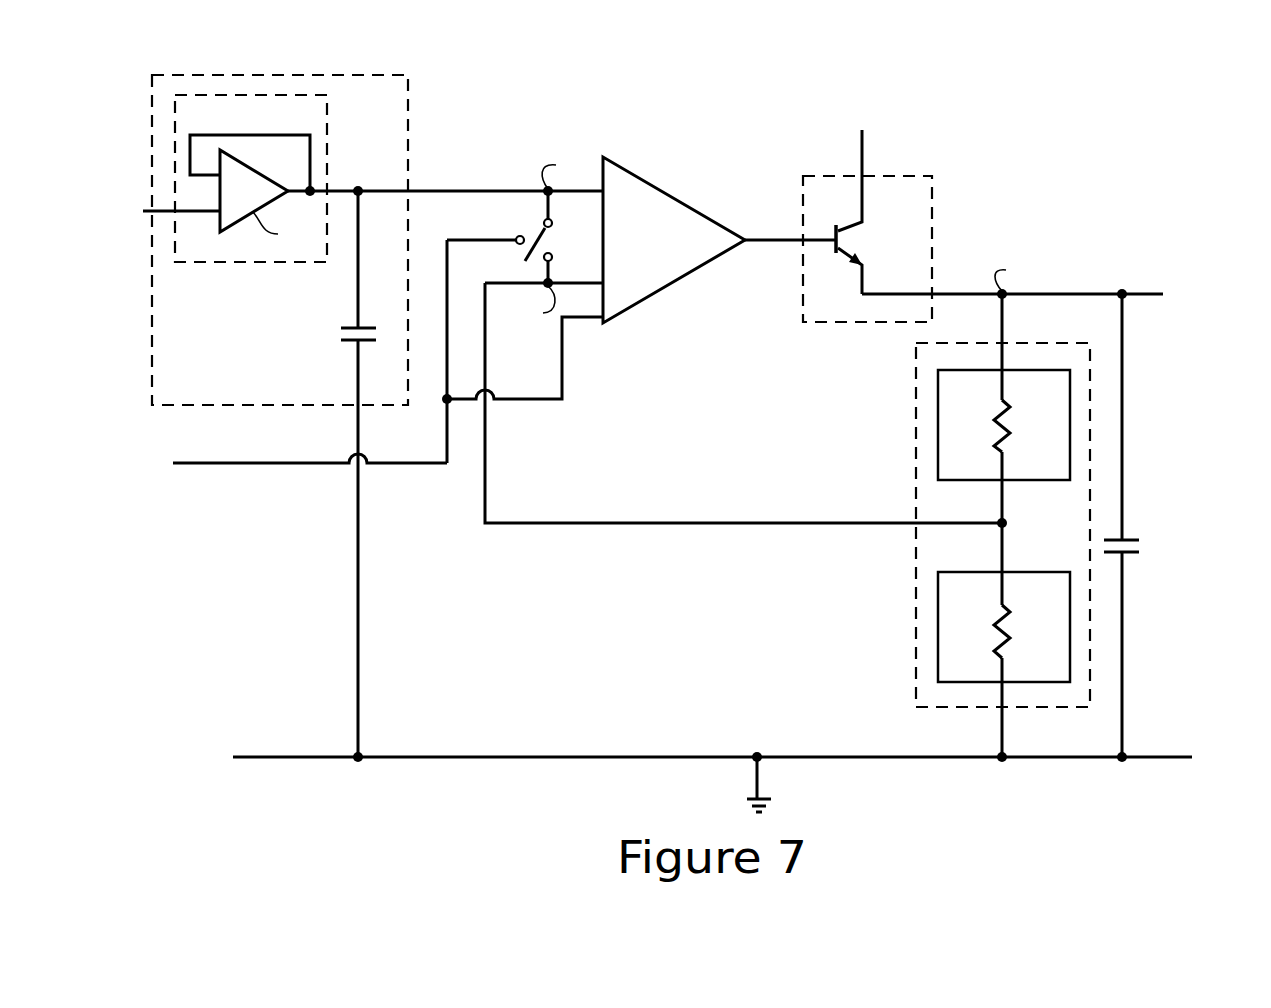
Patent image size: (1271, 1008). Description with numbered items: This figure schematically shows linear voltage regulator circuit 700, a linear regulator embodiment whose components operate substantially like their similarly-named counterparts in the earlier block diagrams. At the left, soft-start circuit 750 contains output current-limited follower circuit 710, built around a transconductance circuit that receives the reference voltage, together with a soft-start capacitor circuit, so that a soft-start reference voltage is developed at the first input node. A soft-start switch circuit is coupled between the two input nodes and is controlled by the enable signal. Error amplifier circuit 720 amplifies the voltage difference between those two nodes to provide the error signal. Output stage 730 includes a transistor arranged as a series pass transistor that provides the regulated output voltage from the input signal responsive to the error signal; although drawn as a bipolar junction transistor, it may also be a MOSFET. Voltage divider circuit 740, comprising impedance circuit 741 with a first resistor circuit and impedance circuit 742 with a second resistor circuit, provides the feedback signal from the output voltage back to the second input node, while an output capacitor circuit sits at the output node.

The linear voltage regulator circuit 700 is at (744, 66).
The output current-limited follower circuit 710 is at (273, 126).
The error amplifier circuit 720 is at (673, 253).
The output stage 730 is at (920, 208).
The voltage divider circuit 740 is at (1053, 523).
The impedance circuit 741 is at (1061, 405).
The impedance circuit 742 is at (1061, 605).
The soft-start circuit 750 is at (391, 111).